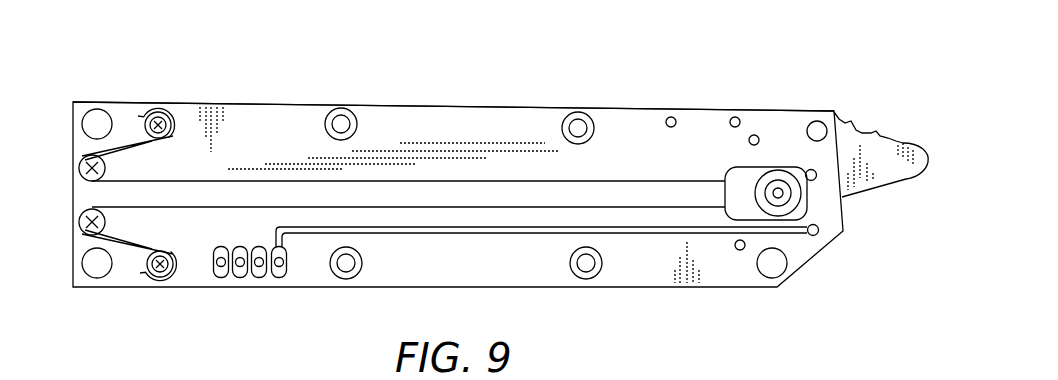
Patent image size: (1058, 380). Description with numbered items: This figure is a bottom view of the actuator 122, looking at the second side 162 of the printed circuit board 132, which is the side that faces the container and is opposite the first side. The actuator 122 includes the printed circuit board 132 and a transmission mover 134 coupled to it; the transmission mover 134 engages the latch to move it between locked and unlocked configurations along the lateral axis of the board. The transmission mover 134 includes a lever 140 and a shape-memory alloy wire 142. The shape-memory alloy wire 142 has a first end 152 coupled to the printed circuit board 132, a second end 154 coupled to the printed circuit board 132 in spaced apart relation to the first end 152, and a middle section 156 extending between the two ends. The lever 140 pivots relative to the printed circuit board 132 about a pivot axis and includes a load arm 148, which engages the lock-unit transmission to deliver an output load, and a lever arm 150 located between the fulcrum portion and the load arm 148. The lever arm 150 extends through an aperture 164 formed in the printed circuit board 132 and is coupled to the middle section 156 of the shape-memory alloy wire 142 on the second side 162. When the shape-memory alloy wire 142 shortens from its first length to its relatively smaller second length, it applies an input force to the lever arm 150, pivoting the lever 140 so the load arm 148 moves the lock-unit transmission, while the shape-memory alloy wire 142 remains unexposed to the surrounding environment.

The actuator 122 is at (444, 144).
The printed circuit board 132 is at (242, 100).
The transmission mover 134 is at (856, 107).
The lever 140 is at (908, 139).
The shape-memory alloy wire 142 is at (399, 157).
The load arm 148 is at (798, 203).
The lever arm 150 is at (898, 189).
The first end 152 is at (176, 114).
The second end 154 is at (165, 277).
The middle section 156 is at (492, 180).
The second side 162 is at (312, 126).
The aperture 164 is at (755, 164).